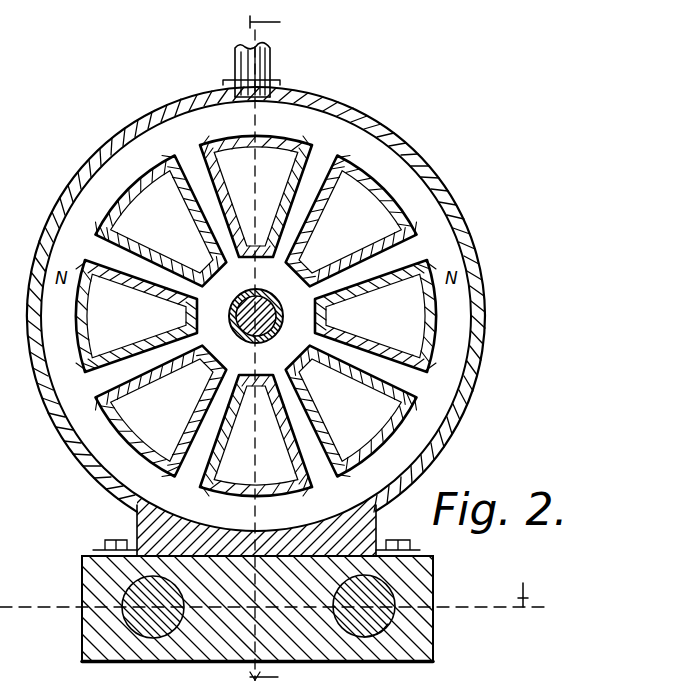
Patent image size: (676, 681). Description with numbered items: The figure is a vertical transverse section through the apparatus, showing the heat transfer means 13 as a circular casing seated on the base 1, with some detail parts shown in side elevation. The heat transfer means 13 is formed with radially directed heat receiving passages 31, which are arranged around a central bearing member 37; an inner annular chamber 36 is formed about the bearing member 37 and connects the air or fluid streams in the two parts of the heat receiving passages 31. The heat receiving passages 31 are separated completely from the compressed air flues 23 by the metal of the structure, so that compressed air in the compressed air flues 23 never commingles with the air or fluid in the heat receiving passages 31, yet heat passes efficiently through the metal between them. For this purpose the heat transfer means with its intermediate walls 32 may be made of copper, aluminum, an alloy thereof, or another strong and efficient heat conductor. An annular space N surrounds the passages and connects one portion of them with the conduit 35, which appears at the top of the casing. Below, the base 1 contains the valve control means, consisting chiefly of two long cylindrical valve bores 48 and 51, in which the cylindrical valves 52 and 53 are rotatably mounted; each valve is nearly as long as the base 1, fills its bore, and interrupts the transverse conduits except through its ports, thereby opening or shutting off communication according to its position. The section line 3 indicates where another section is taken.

The base 1 is at (272, 347).
The section line 3- 3 is at (522, 585).
The heat transfer means 13 is at (487, 356).
The compressed air flues 23 is at (256, 316).
The heat receiving passages 31 is at (256, 316).
The intermediate walls 32 is at (256, 316).
The conduit 35 is at (272, 63).
The inner annular chamber 36 is at (270, 317).
The bearing member 37 is at (278, 335).
The valve bore 48 is at (148, 631).
The valve bore 51 is at (390, 618).
The cylindrical valve 52 is at (140, 596).
The cylindrical valve 53 is at (373, 592).